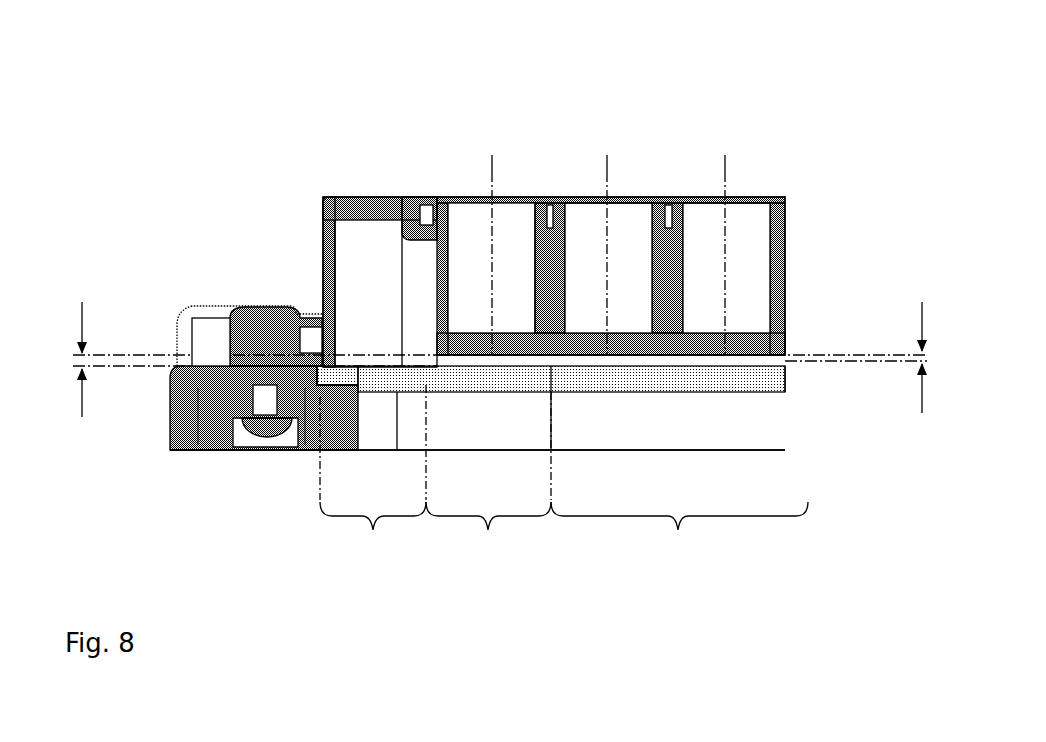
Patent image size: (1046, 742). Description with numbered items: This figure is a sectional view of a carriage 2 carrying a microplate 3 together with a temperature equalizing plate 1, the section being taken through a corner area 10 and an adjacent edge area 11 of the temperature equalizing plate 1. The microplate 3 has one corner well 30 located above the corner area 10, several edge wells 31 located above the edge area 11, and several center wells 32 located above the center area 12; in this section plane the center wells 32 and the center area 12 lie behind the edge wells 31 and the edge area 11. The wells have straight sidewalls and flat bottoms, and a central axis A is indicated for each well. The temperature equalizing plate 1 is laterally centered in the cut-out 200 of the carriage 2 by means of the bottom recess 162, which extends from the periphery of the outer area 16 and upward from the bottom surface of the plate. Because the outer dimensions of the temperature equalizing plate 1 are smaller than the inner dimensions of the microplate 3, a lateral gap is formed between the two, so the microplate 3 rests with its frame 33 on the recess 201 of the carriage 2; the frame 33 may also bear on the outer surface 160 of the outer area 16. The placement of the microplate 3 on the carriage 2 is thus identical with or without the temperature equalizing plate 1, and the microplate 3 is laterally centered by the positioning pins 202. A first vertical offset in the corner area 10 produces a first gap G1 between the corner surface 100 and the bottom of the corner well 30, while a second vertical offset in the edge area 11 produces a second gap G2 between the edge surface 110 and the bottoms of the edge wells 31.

The temperature equalizing plate 1 is at (536, 366).
The carriage 2 is at (230, 364).
The microplate 3 is at (564, 191).
The corner area 10 is at (488, 532).
The edge area 11 is at (679, 532).
The center area 12 is at (750, 497).
The outer area 16 is at (373, 532).
The corner well 30 is at (474, 230).
The edge wells 31 is at (592, 230).
The center wells 32 is at (611, 104).
The frame 33 is at (323, 228).
The corner surface 100 is at (432, 355).
The edge surface 110 is at (780, 360).
The outer surface 160 is at (350, 367).
The bottom recess 162 is at (348, 385).
The cut-out 200 is at (610, 552).
The recess 201 is at (246, 324).
The positioning pins 202 is at (240, 316).
The first gap G1 is at (84, 349).
The second gap G2 is at (924, 347).
The central axis A is at (492, 163).